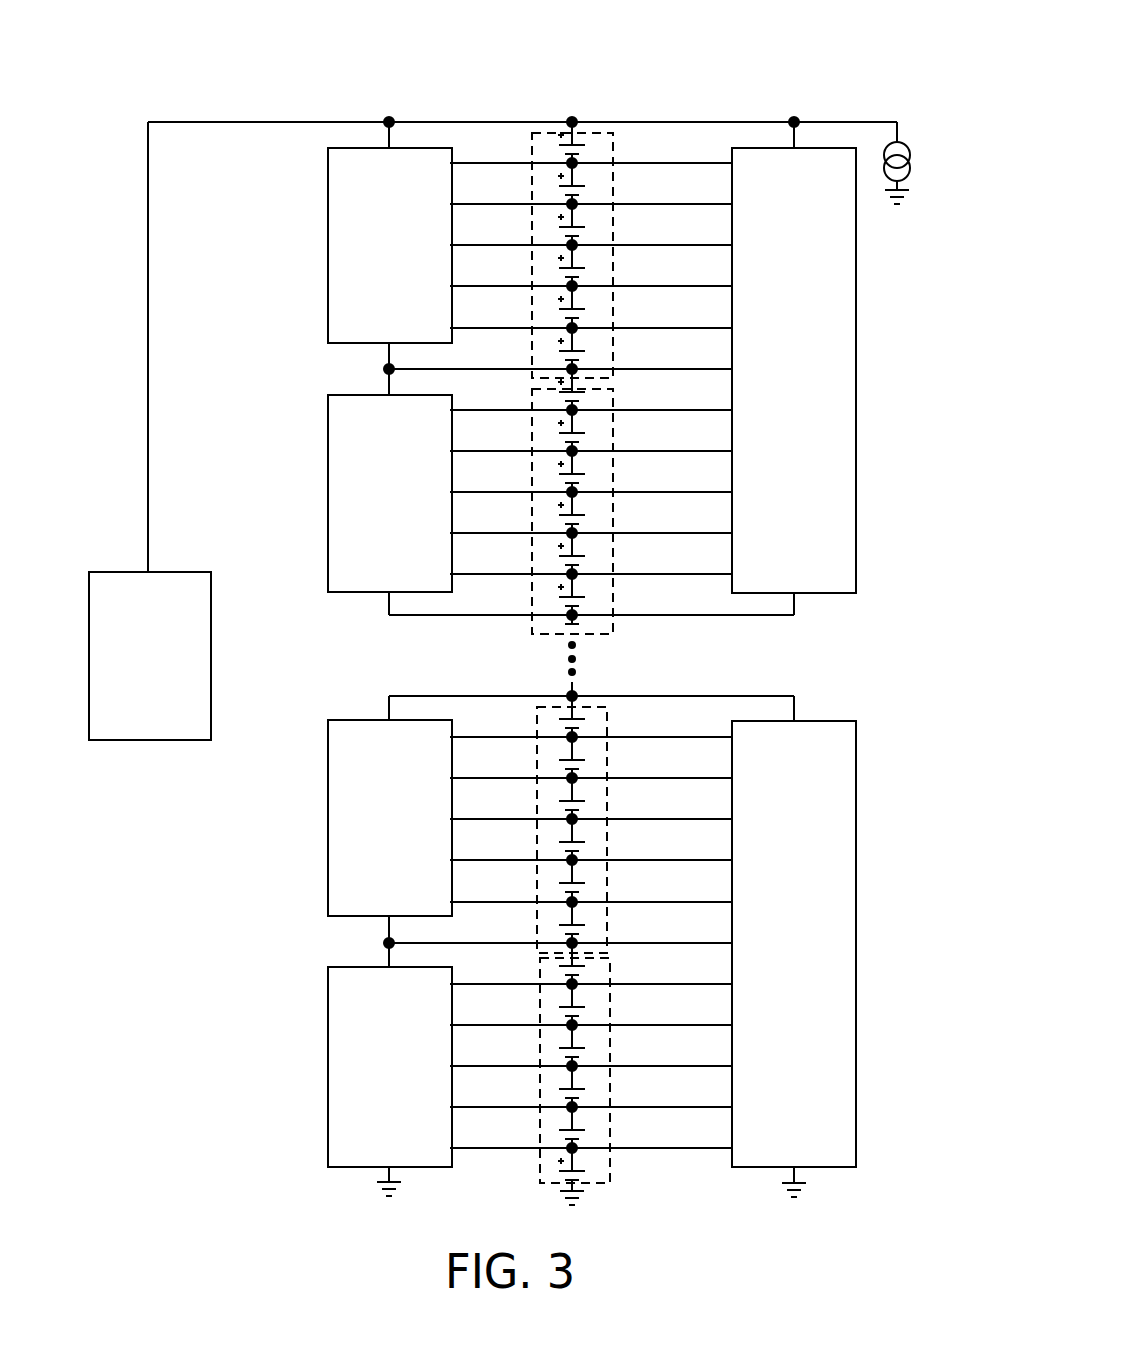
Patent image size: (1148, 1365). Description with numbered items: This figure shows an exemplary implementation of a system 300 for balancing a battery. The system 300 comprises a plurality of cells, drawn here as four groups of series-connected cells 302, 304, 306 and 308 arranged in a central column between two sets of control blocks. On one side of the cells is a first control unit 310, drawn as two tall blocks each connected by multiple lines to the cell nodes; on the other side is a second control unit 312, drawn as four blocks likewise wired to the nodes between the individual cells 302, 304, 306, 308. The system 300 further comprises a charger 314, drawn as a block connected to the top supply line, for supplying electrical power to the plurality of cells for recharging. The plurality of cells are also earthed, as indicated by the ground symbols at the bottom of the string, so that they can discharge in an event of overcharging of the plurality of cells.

The system 300 is at (808, 55).
The cell 302 is at (613, 278).
The cell 304 is at (613, 482).
The cell 306 is at (607, 852).
The cell 308 is at (609, 1055).
The first control unit 310 is at (812, 388).
The second control unit 312 is at (410, 262).
The charger 314 is at (169, 665).